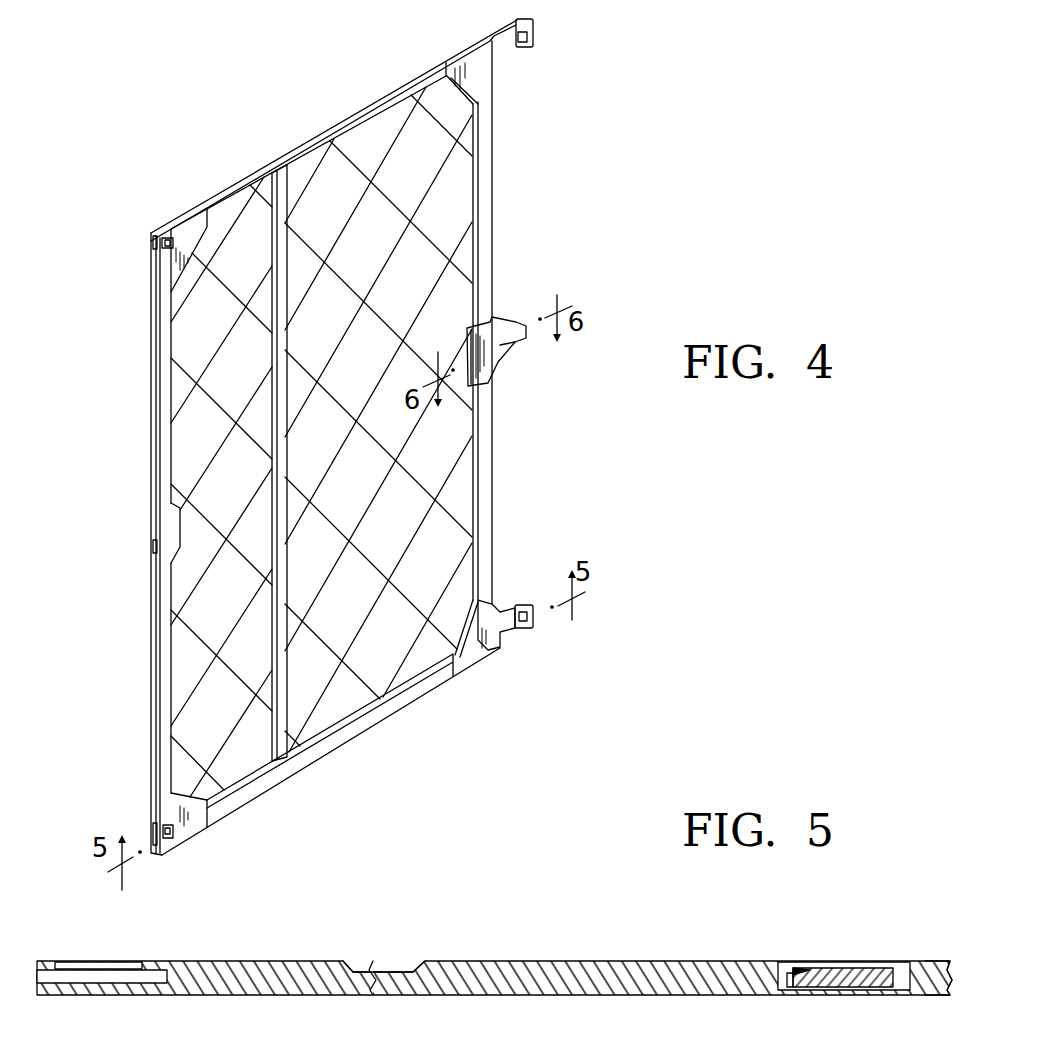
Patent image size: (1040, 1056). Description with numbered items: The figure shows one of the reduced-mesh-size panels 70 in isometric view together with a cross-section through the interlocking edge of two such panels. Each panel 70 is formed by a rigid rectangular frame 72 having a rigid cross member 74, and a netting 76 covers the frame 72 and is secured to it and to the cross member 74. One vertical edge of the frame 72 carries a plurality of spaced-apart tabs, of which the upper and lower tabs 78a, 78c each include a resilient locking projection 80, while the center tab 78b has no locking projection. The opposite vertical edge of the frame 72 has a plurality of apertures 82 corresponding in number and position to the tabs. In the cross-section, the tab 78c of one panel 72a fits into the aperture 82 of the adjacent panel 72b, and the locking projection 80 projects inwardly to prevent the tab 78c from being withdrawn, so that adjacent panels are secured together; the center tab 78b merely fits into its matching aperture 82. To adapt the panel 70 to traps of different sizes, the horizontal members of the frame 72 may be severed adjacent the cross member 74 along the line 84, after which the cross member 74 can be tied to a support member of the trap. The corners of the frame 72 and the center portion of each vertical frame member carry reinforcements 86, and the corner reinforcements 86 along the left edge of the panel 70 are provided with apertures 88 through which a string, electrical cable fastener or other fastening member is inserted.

In FIG. 4, the panel 70 is at (316, 112).
In FIG. 4, the rigid rectangular frame 72 is at (493, 234).
In FIG. 5, the rigid rectangular frame 72 is at (266, 960).
In FIG. 5, the panel 72a is at (541, 960).
In FIG. 5, the adjacent panel 72b is at (936, 966).
In FIG. 4, the rigid cross member 74 is at (288, 364).
In FIG. 4, the netting 76 is at (314, 525).
In FIG. 4, the tab 78a is at (536, 30).
In FIG. 4, the center tab 78b is at (510, 320).
In FIG. 4, the tab 78c is at (524, 604).
In FIG. 5, the tab 78c is at (850, 975).
In FIG. 4, the resilient locking projection 80 is at (528, 38).
In FIG. 5, the resilient locking projection 80 is at (805, 970).
In FIG. 4, the aperture 82 is at (152, 243).
In FIG. 5, the aperture 82 is at (116, 980).
In FIG. 4, the line 84 is at (266, 172).
In FIG. 4, the reinforcement 86 is at (196, 226).
In FIG. 4, the aperture 88 is at (170, 240).